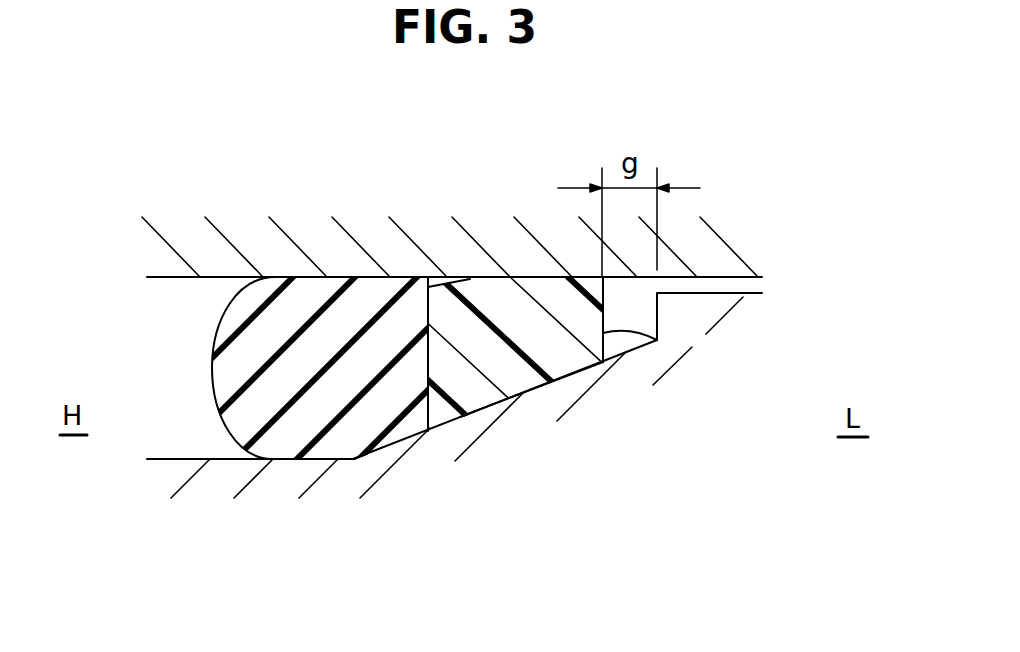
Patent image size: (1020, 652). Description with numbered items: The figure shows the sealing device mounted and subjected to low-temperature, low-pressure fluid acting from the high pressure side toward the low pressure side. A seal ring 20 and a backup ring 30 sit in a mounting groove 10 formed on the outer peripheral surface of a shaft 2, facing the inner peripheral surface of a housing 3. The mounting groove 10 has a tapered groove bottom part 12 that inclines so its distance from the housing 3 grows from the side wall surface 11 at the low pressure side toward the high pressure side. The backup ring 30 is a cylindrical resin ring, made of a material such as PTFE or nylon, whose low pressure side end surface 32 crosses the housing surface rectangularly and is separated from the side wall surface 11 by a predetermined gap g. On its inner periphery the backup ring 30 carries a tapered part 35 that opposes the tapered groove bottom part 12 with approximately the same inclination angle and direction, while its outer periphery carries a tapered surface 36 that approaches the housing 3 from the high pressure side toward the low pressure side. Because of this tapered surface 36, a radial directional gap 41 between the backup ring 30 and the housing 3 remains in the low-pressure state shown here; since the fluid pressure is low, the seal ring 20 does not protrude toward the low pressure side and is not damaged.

The shaft 2 is at (358, 475).
The housing 3 is at (405, 250).
The mounting groove 10 is at (206, 460).
The side wall surface 11 is at (664, 308).
The tapered groove bottom part 12 is at (489, 407).
The seal ring 20 is at (331, 317).
The backup ring 30 is at (499, 307).
The low pressure side end surface 32 is at (660, 340).
The tapered part 35 is at (527, 392).
The tapered surface 36 is at (462, 283).
The radial directional gap 41 is at (443, 275).